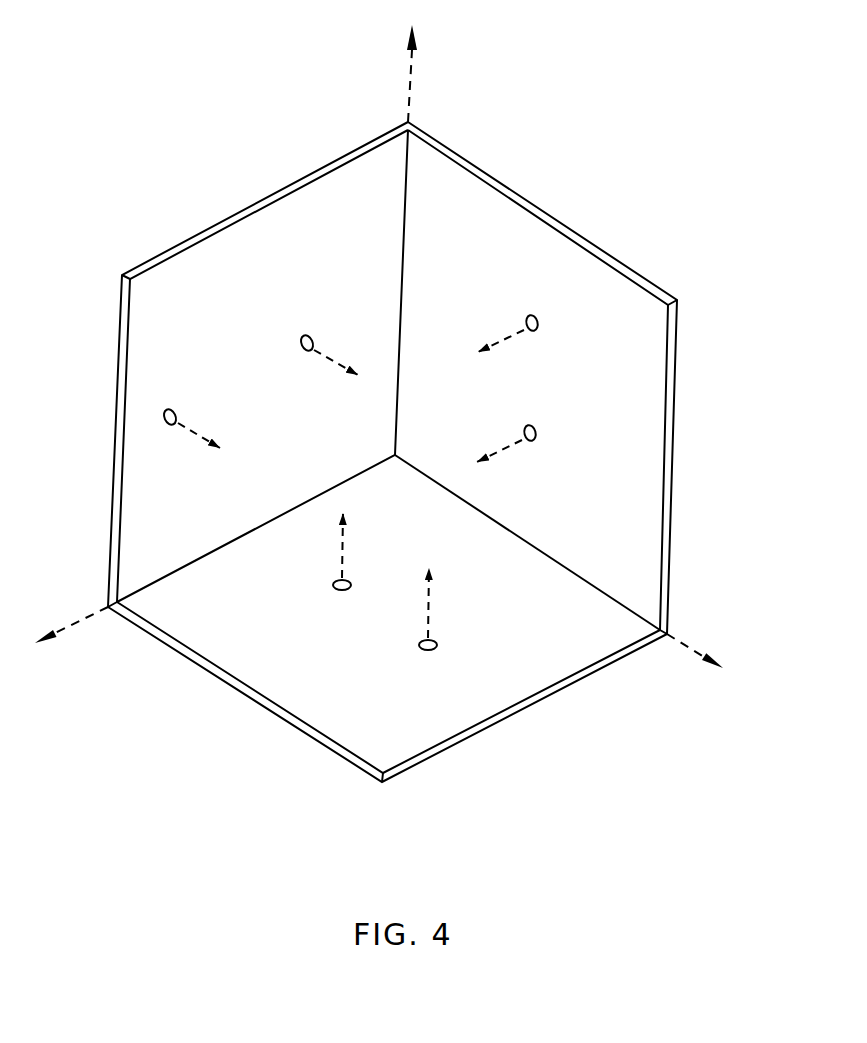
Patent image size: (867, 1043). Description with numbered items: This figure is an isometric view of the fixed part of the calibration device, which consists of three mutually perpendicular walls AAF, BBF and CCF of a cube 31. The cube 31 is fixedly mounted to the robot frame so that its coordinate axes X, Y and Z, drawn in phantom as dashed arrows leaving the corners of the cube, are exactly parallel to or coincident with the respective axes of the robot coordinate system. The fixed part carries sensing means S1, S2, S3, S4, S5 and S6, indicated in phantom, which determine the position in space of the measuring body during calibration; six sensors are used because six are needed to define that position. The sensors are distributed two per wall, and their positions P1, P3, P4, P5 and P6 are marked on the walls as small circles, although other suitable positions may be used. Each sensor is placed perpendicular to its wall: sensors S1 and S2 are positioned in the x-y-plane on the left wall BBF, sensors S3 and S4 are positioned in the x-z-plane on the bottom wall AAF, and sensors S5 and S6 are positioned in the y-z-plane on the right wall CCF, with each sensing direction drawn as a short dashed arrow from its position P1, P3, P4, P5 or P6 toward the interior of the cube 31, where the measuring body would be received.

The cube 31 is at (440, 452).
The wall BBF is at (278, 227).
The wall CCF is at (643, 429).
The wall AAF is at (498, 696).
The sensor position P1 is at (168, 407).
The sensor position P3 is at (336, 599).
The sensor position P4 is at (442, 655).
The sensor position P5 is at (423, 379).
The sensor position P6 is at (550, 321).
The sensing means S1 is at (207, 449).
The sensing means S2 is at (344, 376).
The sensing means S3 is at (324, 544).
The sensing means S4 is at (447, 595).
The sensing means S5 is at (499, 464).
The sensing means S6 is at (492, 355).
The coordinate axis X is at (71, 640).
The coordinate axis Y is at (700, 667).
The coordinate axis Z is at (427, 73).